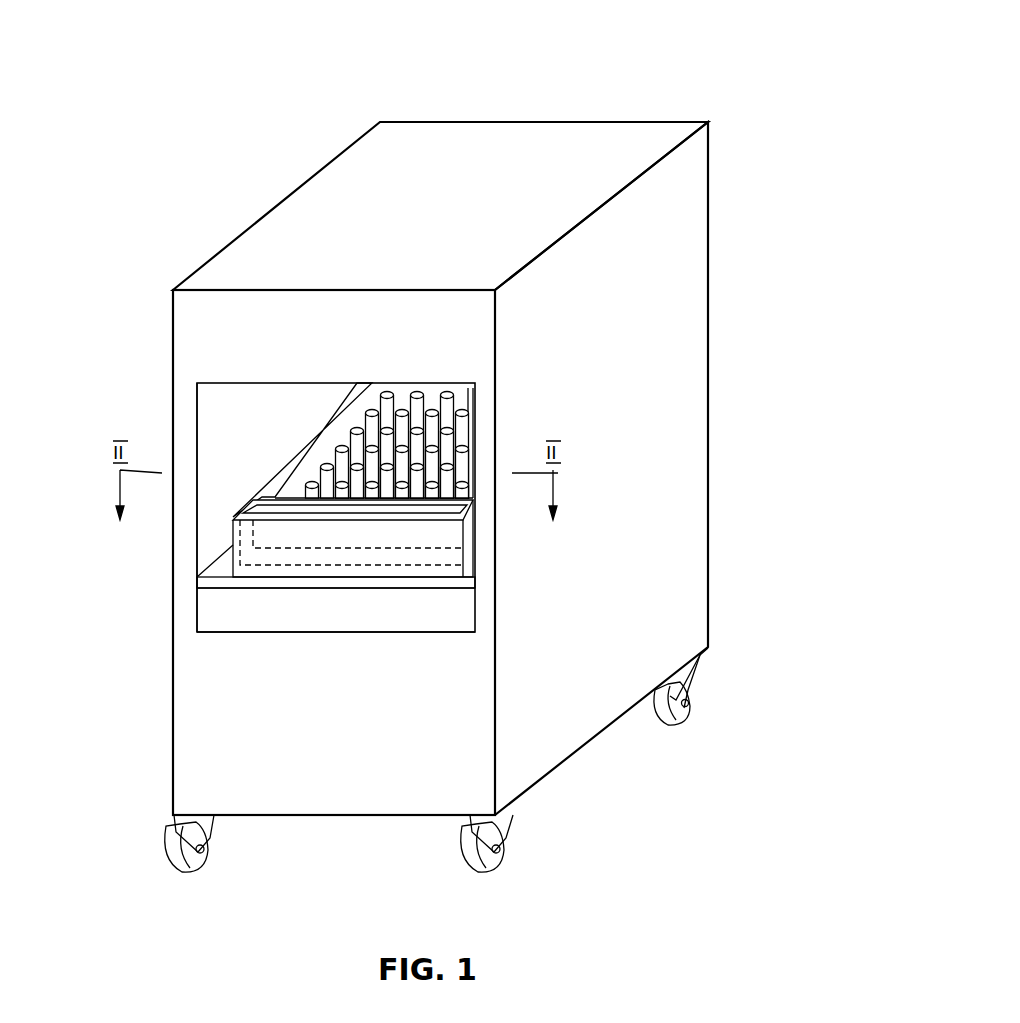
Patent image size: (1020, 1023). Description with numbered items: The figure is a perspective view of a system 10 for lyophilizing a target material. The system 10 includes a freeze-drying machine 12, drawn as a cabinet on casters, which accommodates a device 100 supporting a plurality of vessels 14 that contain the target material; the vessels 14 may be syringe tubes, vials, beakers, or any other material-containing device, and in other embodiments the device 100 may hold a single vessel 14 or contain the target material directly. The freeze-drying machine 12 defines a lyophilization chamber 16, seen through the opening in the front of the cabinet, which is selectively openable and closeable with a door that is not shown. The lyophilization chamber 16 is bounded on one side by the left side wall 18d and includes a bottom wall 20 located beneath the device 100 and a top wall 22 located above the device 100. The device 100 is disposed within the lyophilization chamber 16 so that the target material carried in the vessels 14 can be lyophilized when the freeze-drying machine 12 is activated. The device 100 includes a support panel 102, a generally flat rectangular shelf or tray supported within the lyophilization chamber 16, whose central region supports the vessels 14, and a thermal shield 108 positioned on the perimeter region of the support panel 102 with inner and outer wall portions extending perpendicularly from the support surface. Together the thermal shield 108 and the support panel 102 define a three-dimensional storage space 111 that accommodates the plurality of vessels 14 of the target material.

The system 10 is at (608, 95).
The freeze-drying machine 12 is at (483, 145).
The vessels 14 is at (473, 383).
The lyophilization chamber 16 is at (224, 413).
The left side wall 18d is at (218, 502).
The bottom wall 20 is at (280, 617).
The top wall 22 is at (243, 394).
The device 100 is at (352, 535).
The support panel 102 is at (228, 583).
The thermal shield 108 is at (403, 538).
The three-dimensional storage space 111 is at (342, 433).